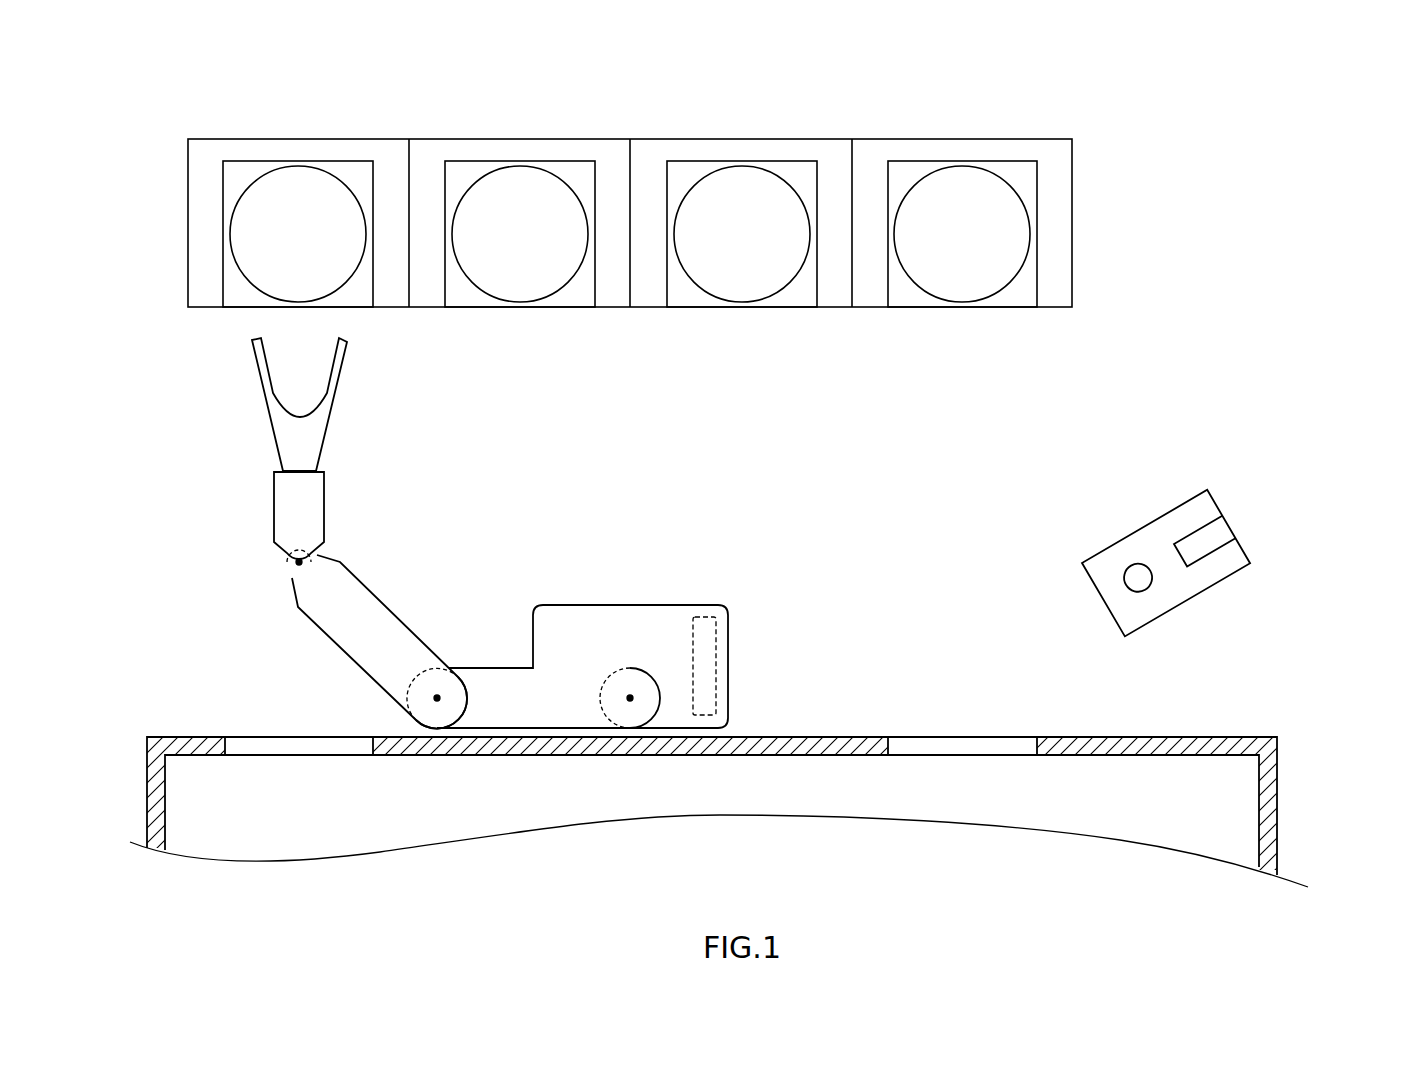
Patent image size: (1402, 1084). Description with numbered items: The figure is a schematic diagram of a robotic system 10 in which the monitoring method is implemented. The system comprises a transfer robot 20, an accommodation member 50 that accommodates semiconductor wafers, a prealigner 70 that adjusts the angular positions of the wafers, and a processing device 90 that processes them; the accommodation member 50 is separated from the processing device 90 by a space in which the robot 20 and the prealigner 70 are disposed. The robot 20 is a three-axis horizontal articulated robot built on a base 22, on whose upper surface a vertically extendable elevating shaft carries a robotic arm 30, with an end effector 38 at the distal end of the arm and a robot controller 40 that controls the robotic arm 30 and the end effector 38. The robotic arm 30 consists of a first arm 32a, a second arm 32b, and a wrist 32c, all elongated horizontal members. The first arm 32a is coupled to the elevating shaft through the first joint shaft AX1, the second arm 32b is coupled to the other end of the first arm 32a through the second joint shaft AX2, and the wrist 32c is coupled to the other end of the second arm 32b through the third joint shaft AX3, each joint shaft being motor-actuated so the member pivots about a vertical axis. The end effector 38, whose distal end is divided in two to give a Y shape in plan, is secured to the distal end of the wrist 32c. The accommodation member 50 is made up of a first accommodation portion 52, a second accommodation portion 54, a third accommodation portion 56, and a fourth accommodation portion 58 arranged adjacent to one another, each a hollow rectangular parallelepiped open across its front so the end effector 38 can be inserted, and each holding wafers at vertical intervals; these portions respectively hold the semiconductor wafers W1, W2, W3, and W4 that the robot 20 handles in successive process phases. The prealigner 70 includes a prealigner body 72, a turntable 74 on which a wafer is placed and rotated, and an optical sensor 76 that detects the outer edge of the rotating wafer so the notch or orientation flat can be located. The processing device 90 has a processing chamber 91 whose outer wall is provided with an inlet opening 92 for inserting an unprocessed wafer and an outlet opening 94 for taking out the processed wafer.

The robotic system 10 is at (80, 65).
The robot 20 is at (502, 533).
The base 22 is at (688, 606).
The robotic arm 30 is at (503, 630).
The first arm 32a is at (473, 667).
The second arm 32b is at (363, 577).
The wrist 32c is at (324, 510).
The end effector 38 is at (239, 382).
The robot controller 40 is at (708, 616).
The accommodation member 50 is at (1049, 130).
The first accommodation portion 52 is at (352, 160).
The second accommodation portion 54 is at (573, 160).
The third accommodation portion 56 is at (793, 160).
The fourth accommodation portion 58 is at (1016, 160).
The prealigner 70 is at (1213, 522).
The prealigner body 72 is at (1103, 562).
The turntable 74 is at (1140, 577).
The optical sensor 76 is at (1230, 513).
The processing device 90 is at (763, 828).
The processing chamber 91 is at (227, 838).
The inlet opening 92 is at (300, 747).
The outlet opening 94 is at (967, 747).
The first joint shaft AX1 is at (628, 687).
The second joint shaft AX2 is at (432, 685).
The third joint shaft AX3 is at (282, 556).
The semiconductor wafer W1 is at (295, 192).
The semiconductor wafer W2 is at (517, 192).
The semiconductor wafer W3 is at (737, 192).
The semiconductor wafer W4 is at (958, 192).